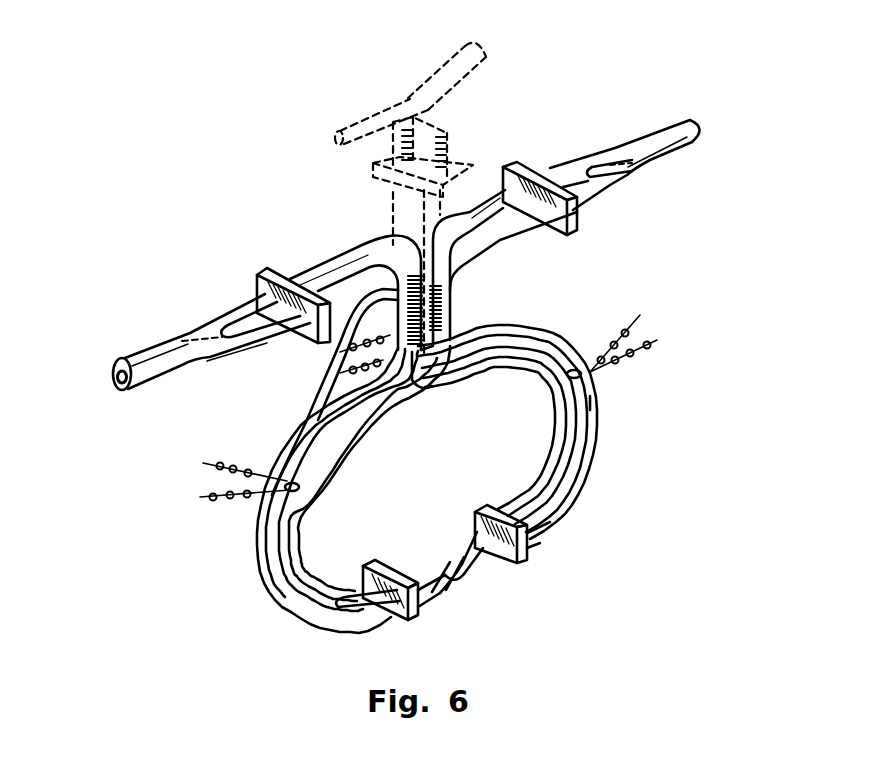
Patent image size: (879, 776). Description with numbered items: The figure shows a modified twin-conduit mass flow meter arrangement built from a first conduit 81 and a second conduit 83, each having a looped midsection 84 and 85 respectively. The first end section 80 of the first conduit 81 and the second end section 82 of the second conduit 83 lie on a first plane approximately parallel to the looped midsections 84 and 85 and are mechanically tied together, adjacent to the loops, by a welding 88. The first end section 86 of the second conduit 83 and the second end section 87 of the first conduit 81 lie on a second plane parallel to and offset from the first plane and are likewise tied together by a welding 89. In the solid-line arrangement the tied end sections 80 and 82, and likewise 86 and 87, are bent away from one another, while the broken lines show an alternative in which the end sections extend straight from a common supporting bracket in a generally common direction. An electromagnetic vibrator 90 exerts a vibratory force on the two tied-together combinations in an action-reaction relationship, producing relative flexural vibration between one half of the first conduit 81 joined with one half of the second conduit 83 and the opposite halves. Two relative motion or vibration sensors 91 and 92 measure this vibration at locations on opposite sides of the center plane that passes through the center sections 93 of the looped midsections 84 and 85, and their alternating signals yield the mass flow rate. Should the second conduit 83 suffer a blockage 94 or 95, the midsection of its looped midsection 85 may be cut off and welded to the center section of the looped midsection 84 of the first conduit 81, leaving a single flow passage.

The first end section of the first conduit 80 is at (362, 263).
The first conduit 81 is at (253, 553).
The second end section of the second conduit 82 is at (513, 227).
The second conduit 83 is at (280, 587).
The looped midsection of the first conduit 84 is at (430, 583).
The looped midsection of the second conduit 85 is at (483, 555).
The first end section of the second conduit 86 is at (288, 266).
The second end section of the first conduit 87 is at (487, 198).
The welding 88 is at (447, 317).
The welding 89 is at (340, 367).
The electromagnetic vibrator 90 is at (420, 395).
The relative motion or vibration sensor 91 is at (250, 517).
The relative motion or vibration sensor 92 is at (597, 407).
The center sections of the looped midsections 93 is at (447, 553).
The blockage 94 is at (210, 320).
The blockage 95 is at (613, 163).